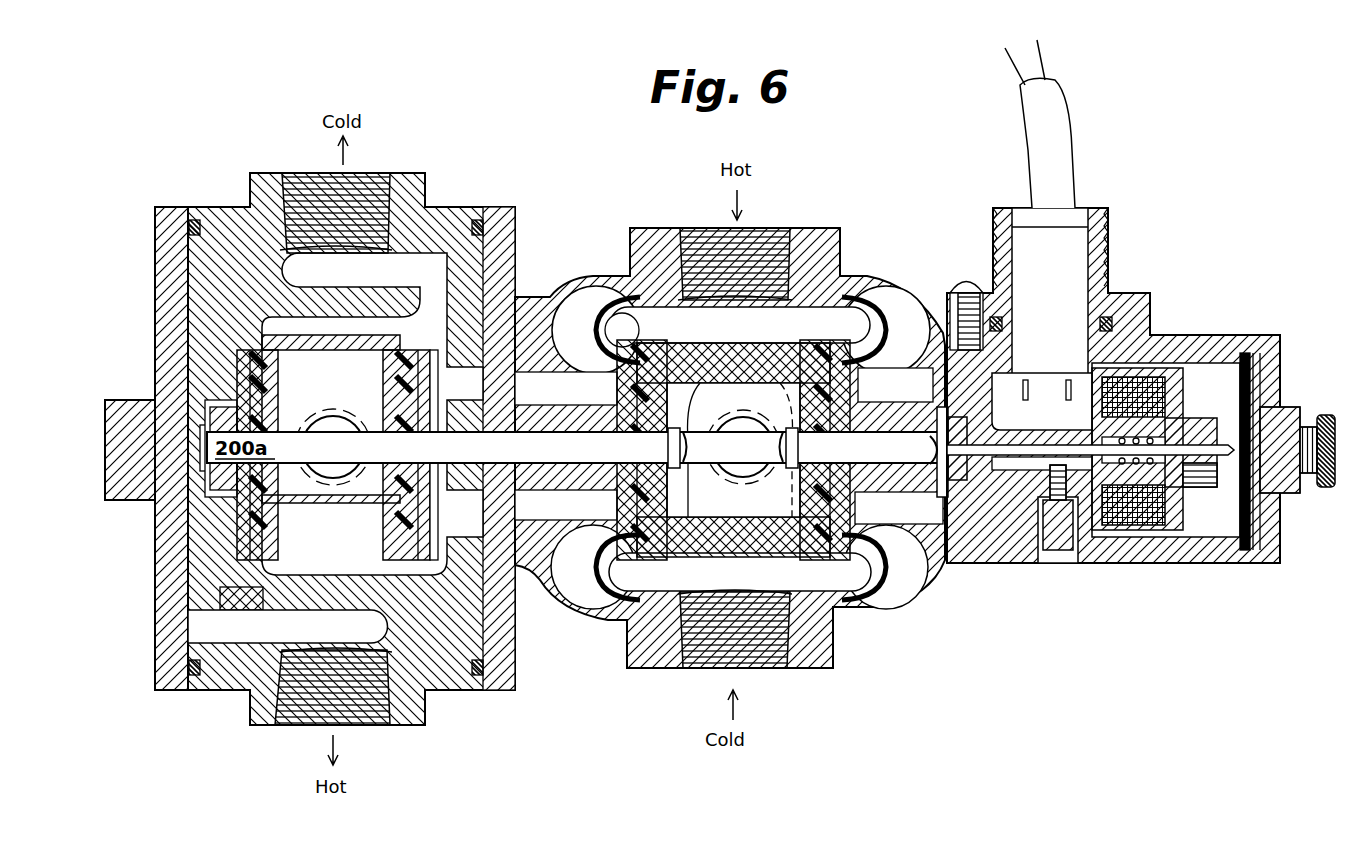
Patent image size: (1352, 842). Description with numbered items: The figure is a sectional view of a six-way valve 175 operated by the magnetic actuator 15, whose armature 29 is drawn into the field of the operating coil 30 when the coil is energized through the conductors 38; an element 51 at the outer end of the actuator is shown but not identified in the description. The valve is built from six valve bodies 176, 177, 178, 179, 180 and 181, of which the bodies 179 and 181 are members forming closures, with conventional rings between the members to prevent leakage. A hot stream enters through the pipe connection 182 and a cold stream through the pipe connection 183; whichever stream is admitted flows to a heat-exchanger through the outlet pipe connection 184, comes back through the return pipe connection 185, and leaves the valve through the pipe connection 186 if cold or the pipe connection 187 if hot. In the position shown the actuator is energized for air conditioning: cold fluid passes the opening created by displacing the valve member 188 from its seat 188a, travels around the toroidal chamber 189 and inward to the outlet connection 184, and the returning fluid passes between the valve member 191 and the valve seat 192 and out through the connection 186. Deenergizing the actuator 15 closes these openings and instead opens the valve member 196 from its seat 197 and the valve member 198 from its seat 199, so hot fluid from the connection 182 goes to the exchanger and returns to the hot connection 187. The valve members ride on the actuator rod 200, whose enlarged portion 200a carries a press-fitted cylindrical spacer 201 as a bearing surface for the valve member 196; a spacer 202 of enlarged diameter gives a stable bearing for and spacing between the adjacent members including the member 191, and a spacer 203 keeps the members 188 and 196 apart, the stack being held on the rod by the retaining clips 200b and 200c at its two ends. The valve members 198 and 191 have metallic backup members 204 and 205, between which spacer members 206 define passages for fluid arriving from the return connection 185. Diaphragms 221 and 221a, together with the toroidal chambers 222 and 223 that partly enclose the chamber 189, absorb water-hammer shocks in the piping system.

The magnetic actuator 15 is at (1195, 560).
The armature 29 is at (1204, 352).
The operating coil 30 is at (1143, 505).
The conductors 38 is at (1030, 48).
The adjusting knob 51 is at (1325, 414).
The six-way valve 175 is at (585, 746).
The valve body 176 is at (889, 605).
The valve body 177 is at (793, 665).
The valve body 178 is at (645, 640).
The valve body 179 is at (497, 678).
The valve body 180 is at (403, 707).
The valve body 181 is at (170, 682).
The pipe connection 182 is at (761, 248).
The pipe connection 183 is at (705, 642).
The outlet pipe connection 184 is at (758, 508).
The return pipe connection 185 is at (333, 470).
The pipe connection 186 is at (356, 186).
The pipe connection 187 is at (305, 705).
The valve member 188 is at (612, 394).
The valve seat 188a is at (762, 397).
The toroidal chamber 189 is at (634, 317).
The valve member 191 is at (448, 455).
The valve seat 192 is at (420, 348).
The valve member 196 is at (813, 660).
The valve seat 197 is at (815, 347).
The valve member 198 is at (250, 515).
The valve seat 199 is at (252, 563).
The actuator rod 200 is at (1030, 456).
The enlarged portion 200a is at (215, 458).
The retaining clip 200b is at (205, 425).
The retaining clip 200c is at (935, 451).
The cylindrical spacer 201 is at (895, 385).
The spacer 202 is at (450, 515).
The spacer 203 is at (668, 446).
The metallic backup member 204 is at (268, 384).
The metallic backup member 205 is at (396, 391).
The spacer members 206 is at (360, 340).
The diaphragm 221 is at (857, 322).
The diaphragm 221a is at (607, 310).
The toroidal chamber 222 is at (577, 327).
The toroidal chamber 223 is at (887, 330).